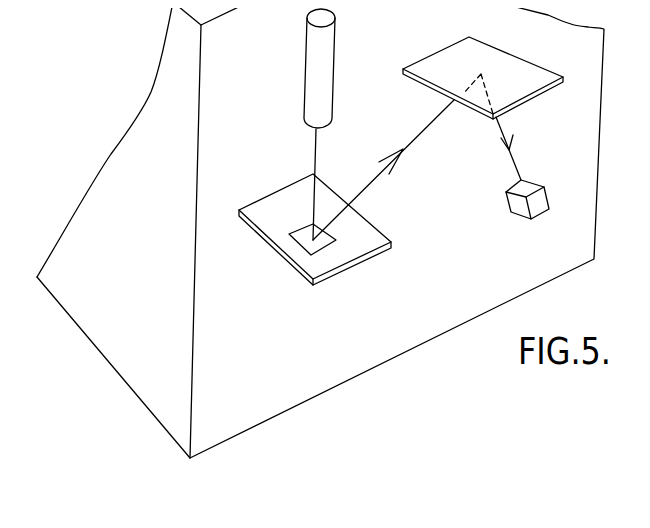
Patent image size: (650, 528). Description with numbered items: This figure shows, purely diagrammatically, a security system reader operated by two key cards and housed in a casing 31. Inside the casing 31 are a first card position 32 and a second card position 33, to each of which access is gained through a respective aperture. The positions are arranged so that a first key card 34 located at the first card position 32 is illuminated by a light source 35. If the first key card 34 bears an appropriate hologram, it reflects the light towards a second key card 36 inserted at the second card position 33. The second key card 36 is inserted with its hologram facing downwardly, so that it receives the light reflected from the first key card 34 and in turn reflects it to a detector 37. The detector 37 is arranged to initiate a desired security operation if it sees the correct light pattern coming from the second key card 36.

The casing 31 is at (148, 392).
The first card position 32 is at (285, 262).
The second card position 33 is at (508, 47).
The first key card 34 is at (288, 192).
The light source 35 is at (315, 42).
The second key card 36 is at (443, 62).
The detector 37 is at (537, 213).